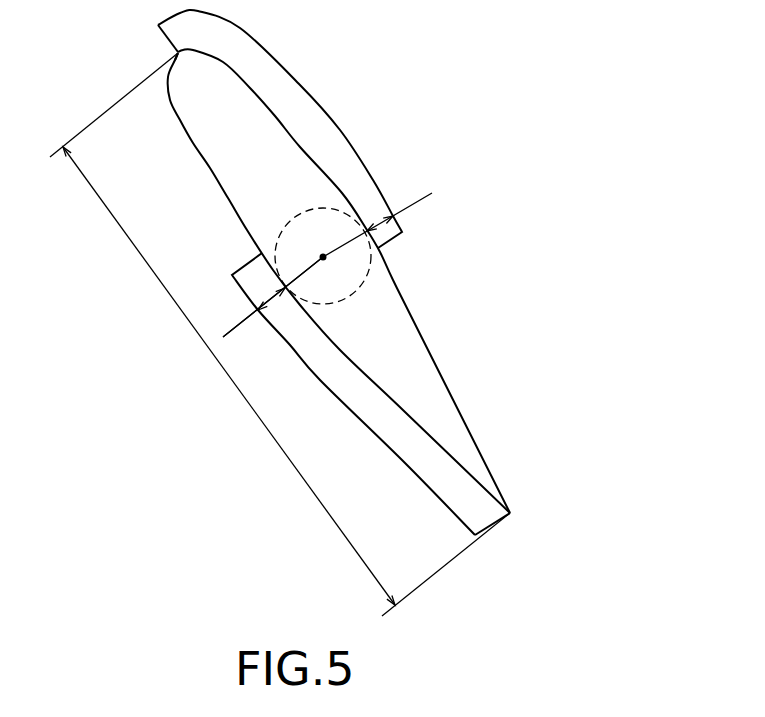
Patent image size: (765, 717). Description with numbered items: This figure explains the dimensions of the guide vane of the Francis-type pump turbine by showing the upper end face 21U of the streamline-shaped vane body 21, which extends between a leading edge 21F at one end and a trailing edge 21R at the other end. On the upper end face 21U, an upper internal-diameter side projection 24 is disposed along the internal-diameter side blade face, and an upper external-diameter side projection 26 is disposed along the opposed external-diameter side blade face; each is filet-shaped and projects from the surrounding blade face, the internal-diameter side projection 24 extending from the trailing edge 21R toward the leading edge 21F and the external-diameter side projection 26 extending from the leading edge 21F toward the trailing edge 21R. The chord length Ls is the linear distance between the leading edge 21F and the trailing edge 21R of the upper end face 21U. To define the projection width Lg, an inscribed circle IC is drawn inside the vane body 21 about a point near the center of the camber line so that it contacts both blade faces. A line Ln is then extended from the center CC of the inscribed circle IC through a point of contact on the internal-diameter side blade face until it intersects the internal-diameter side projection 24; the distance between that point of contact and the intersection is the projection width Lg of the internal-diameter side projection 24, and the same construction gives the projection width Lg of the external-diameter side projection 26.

The vane body 21 is at (348, 285).
The leading edge 21F is at (178, 53).
The trailing edge 21R is at (510, 513).
The upper end face 21U is at (257, 135).
The internal-diameter side projection 24 is at (378, 420).
The external-diameter side projection 26 is at (338, 128).
The center of the inscribed circle CC is at (323, 257).
The inscribed circle IC is at (350, 297).
The projection width Lg is at (382, 217).
The line Ln is at (233, 327).
The chord length Ls is at (280, 334).